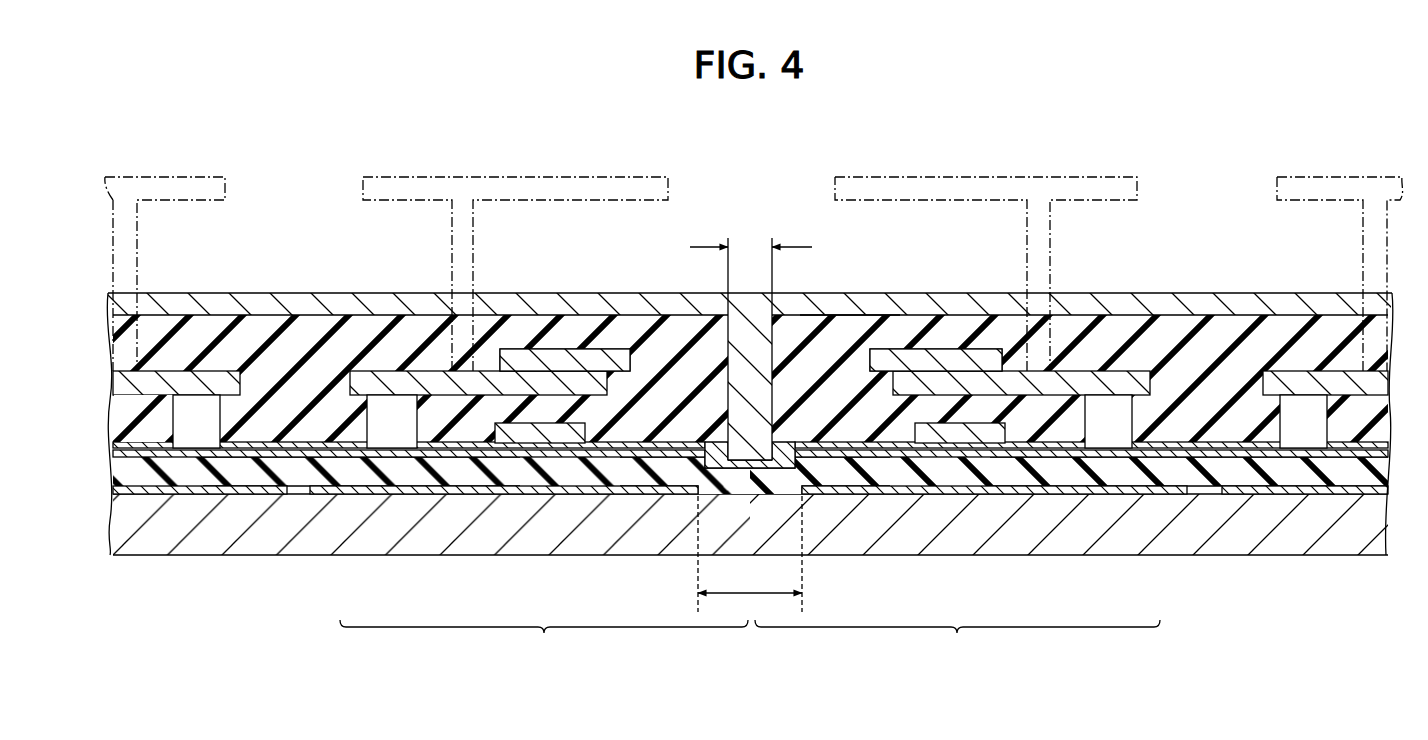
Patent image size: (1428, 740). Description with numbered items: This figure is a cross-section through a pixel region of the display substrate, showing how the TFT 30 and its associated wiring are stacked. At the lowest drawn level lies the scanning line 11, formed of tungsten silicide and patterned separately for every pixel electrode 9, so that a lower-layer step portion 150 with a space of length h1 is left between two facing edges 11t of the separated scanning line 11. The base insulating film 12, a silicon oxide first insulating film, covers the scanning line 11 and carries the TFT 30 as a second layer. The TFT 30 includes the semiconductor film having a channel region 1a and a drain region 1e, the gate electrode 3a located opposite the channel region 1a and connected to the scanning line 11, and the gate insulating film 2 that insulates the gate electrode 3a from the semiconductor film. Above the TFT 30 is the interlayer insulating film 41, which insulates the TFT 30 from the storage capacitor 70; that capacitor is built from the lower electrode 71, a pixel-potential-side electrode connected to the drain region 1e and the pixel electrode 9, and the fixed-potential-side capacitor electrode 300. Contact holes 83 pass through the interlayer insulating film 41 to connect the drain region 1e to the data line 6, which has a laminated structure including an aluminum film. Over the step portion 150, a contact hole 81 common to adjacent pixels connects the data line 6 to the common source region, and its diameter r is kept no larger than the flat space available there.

The channel region 1a is at (567, 459).
The drain region 1e is at (158, 491).
The gate insulating film 2 is at (445, 459).
The gate electrode 3a is at (522, 435).
The data line 6 is at (823, 296).
The pixel electrode 9 is at (205, 181).
The scanning line 11 is at (238, 491).
The edge of scanning line 11t is at (698, 497).
The base insulating film 12 is at (132, 477).
The TFT 30 is at (750, 640).
The interlayer insulating film 41 is at (150, 408).
The storage capacitor 70 is at (582, 257).
The lower electrode 71 is at (178, 380).
The contact hole 81 is at (765, 405).
The contact hole 83 is at (183, 415).
The lower-layer step portion 150 is at (857, 312).
The capacitor electrode 300 is at (528, 360).
The diameter of contact hole r is at (751, 235).
The length of step portion space h1 is at (750, 582).